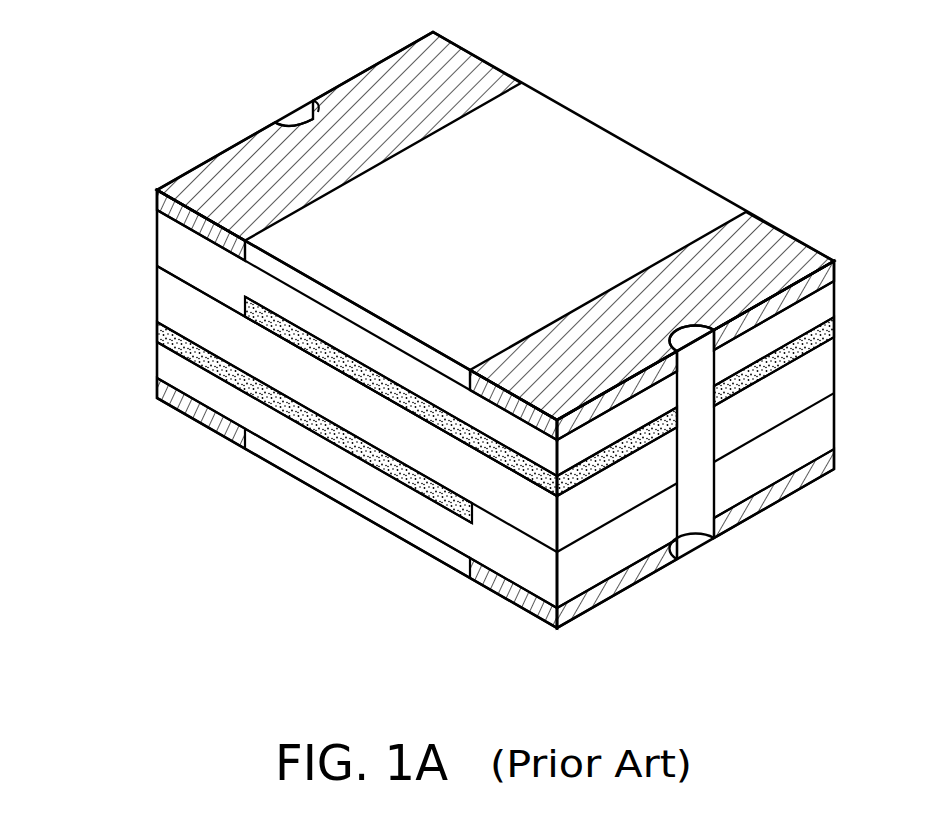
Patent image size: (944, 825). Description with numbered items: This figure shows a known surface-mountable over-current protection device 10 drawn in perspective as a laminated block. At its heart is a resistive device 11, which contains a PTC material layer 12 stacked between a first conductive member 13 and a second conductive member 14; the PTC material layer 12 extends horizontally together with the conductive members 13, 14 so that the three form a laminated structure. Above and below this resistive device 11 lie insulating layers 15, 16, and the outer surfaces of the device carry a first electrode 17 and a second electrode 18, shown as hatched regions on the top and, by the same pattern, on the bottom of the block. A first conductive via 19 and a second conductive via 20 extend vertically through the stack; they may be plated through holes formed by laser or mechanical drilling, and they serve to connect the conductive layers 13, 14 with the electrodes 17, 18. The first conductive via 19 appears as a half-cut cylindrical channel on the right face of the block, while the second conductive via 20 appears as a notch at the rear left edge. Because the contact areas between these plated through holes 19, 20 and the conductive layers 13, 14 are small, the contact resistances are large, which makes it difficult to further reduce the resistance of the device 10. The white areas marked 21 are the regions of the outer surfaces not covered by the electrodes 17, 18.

The surface-mountable over-current protection device 10 is at (772, 97).
The resistive device 11 is at (90, 228).
The PTC material layer 12 is at (165, 302).
The first conductive member 13 is at (245, 310).
The second conductive member 14 is at (165, 333).
The insulating layer 15 is at (165, 232).
The insulating layer 16 is at (165, 373).
The first electrode 17 is at (783, 240).
The second electrode 18 is at (462, 62).
The first conductive via 19 is at (686, 523).
The second conductive via 20 is at (310, 115).
The exposed dielectric region 21 is at (623, 153).